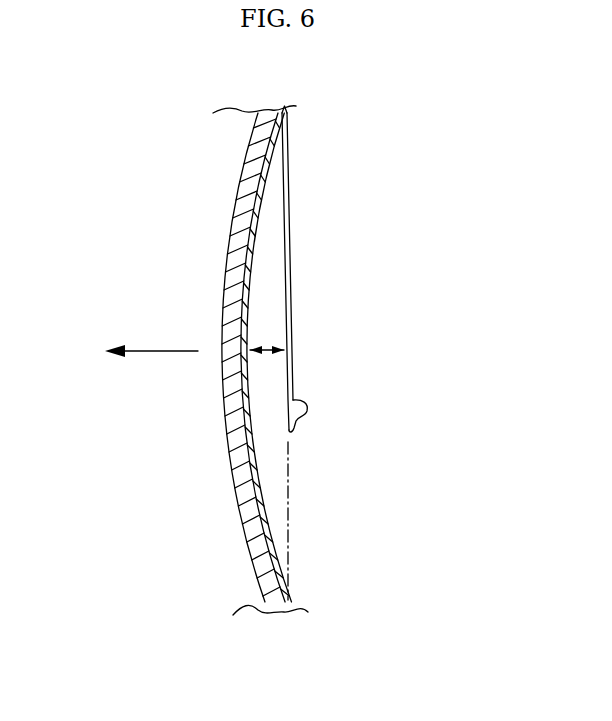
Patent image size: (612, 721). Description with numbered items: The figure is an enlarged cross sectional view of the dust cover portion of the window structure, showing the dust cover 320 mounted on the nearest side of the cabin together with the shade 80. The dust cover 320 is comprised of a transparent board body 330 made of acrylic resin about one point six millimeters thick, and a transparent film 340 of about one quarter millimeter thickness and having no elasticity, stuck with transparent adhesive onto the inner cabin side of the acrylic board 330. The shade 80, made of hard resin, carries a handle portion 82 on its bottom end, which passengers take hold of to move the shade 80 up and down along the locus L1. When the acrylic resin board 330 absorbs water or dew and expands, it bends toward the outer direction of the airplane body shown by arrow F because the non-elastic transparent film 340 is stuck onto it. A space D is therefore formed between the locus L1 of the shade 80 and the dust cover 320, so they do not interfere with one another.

The dust cover 320 is at (242, 357).
The transparent board body 330 is at (240, 230).
The transparent film 340 is at (256, 182).
The shade 80 is at (290, 314).
The handle portion 82 is at (299, 420).
The locus L1 is at (290, 505).
The space D is at (267, 333).
The arrow F is at (140, 356).